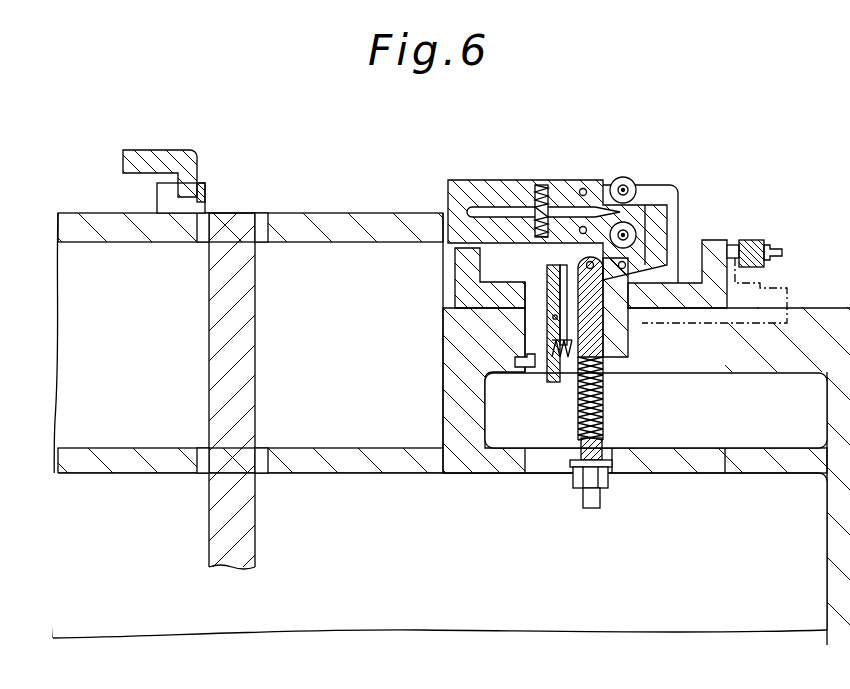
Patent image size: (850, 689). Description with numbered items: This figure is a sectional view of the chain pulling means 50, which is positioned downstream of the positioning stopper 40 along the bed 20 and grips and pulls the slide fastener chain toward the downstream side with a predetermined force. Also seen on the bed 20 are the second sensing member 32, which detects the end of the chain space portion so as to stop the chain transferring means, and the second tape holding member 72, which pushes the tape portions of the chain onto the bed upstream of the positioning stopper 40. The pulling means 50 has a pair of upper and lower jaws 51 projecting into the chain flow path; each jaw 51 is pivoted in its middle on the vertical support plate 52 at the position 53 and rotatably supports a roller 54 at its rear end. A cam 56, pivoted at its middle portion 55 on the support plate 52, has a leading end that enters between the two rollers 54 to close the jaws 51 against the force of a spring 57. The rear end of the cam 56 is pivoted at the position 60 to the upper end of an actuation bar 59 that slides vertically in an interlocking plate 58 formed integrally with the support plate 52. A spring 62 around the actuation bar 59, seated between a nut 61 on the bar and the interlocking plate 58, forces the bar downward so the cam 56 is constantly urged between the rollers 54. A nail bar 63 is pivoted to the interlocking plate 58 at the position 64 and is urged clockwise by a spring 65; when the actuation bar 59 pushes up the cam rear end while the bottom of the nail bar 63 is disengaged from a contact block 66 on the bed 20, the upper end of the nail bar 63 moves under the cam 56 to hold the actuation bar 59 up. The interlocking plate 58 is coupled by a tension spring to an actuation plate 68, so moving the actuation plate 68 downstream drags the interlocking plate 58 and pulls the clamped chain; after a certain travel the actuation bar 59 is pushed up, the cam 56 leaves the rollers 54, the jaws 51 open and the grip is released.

The bed 20 is at (88, 213).
The second sensing member 32 is at (143, 160).
The second tape holding member 72 is at (201, 188).
The positioning stopper 40 is at (235, 378).
The chain pulling means 50 is at (582, 182).
The jaw 51 is at (482, 235).
The spring 57 is at (541, 190).
The pivot position 53 is at (585, 228).
The roller 54 is at (637, 228).
The cam 56 is at (675, 230).
The vertical support plate 52 is at (685, 290).
The interlocking plate 58 is at (703, 243).
The actuation plate 68 is at (778, 286).
The pivot position 60 is at (595, 256).
The nail bar 63 is at (545, 293).
The pivot position 64 is at (552, 318).
The middle portion 55 is at (630, 308).
The contact block 66 is at (537, 361).
The spring 65 is at (556, 372).
The actuation bar 59 is at (598, 416).
The spring 62 is at (578, 425).
The nut 61 is at (608, 476).